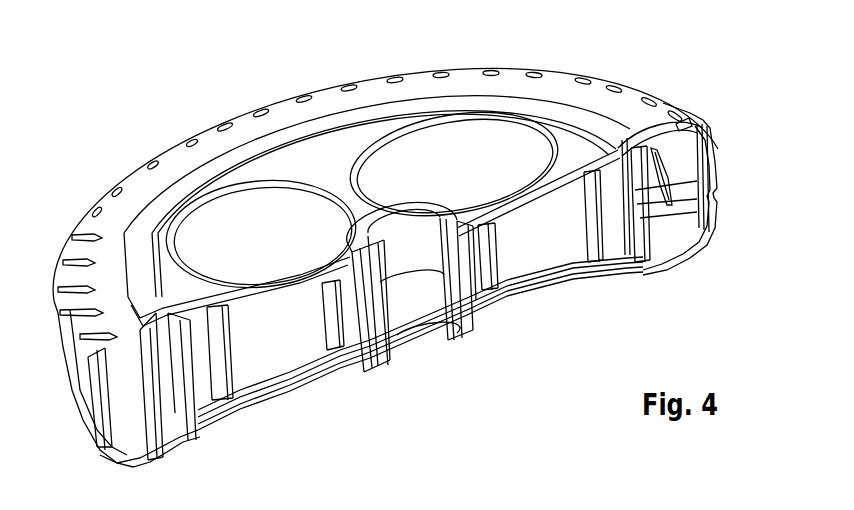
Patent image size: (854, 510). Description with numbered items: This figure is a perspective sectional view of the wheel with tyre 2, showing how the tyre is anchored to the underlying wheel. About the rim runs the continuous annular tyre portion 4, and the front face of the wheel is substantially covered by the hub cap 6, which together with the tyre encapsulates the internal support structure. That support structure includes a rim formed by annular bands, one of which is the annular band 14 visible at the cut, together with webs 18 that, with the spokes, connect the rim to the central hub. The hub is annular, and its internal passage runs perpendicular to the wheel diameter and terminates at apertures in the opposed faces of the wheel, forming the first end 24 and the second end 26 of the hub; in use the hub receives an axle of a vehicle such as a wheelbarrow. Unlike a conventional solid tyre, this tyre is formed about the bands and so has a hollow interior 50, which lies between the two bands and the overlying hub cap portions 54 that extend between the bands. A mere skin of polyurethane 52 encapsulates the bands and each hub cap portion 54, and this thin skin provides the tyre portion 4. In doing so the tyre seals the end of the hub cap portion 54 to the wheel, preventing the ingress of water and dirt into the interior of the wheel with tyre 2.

The wheel with tyre 2 is at (491, 58).
The tyre portion 4 is at (152, 163).
The hub cap 6 is at (247, 218).
The annular band 14 is at (105, 443).
The web 18 is at (672, 185).
The first end of the hub 24 is at (428, 198).
The second end of the hub 26 is at (382, 370).
The hollow interior 50 is at (160, 440).
The skin of polyurethane 52 is at (690, 258).
The hub cap portion 54 is at (663, 127).